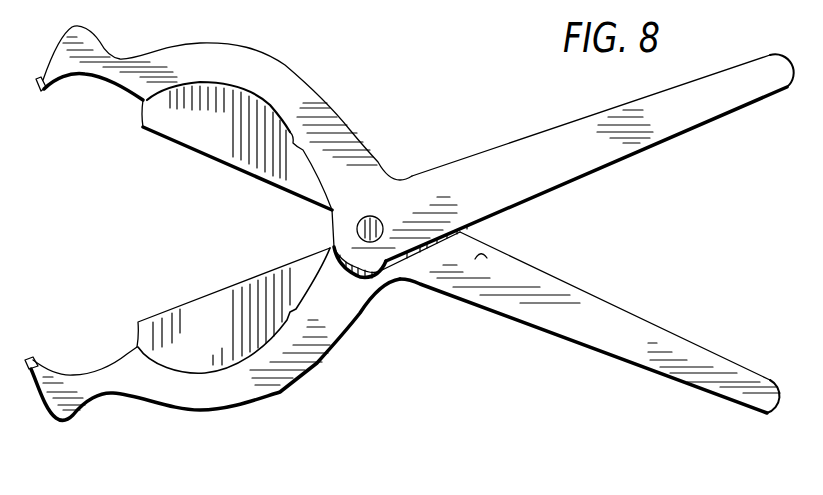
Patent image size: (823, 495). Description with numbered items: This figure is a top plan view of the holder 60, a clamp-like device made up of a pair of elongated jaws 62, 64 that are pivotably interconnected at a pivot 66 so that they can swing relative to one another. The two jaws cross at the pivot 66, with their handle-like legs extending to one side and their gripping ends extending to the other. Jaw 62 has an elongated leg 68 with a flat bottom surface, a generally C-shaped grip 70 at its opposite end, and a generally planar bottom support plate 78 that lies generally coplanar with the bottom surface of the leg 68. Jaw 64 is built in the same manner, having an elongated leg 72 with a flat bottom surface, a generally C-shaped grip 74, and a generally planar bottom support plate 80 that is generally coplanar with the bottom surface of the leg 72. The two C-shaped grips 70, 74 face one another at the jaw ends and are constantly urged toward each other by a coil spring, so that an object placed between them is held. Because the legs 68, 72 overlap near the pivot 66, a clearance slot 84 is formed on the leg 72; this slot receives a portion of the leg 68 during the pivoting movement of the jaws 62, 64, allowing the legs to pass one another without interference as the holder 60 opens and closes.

The holder 60 is at (409, 254).
The jaw 62 is at (415, 189).
The jaw 64 is at (402, 357).
The pivot 66 is at (378, 241).
The leg 68 is at (637, 153).
The grip 70 is at (310, 90).
The leg 72 is at (637, 327).
The grip 74 is at (233, 392).
The bottom support plate 78 is at (247, 157).
The bottom support plate 80 is at (237, 303).
The clearance slot 84 is at (487, 258).